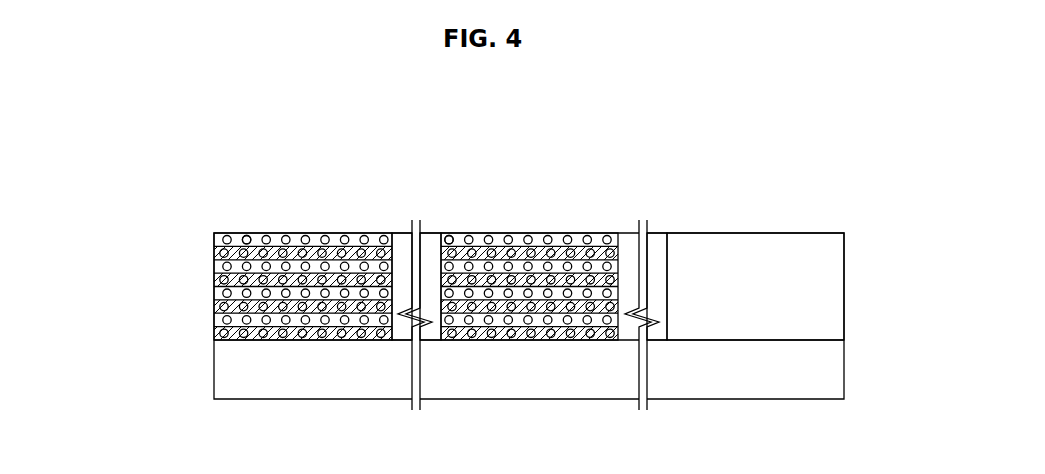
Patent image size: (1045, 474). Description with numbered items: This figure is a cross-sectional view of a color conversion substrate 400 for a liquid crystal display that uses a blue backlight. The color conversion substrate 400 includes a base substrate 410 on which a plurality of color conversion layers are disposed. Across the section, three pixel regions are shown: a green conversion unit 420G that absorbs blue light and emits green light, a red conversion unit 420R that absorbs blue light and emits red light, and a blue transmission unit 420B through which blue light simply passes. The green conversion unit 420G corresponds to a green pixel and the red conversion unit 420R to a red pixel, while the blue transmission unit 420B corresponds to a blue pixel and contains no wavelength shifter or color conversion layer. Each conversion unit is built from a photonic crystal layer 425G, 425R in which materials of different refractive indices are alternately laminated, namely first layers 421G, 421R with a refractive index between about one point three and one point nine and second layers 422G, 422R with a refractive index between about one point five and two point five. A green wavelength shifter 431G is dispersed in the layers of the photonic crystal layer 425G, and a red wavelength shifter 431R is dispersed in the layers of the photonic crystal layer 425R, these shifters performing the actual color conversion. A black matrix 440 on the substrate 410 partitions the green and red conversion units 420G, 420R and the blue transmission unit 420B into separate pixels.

The color conversion substrate 400 is at (158, 111).
The base substrate 410 is at (830, 371).
The green conversion unit 420G is at (291, 228).
The red conversion unit 420R is at (601, 224).
The blue transmission unit 420B is at (756, 228).
The first layer 421G is at (214, 253).
The second layer 422G is at (214, 240).
The first layer 421R is at (460, 315).
The second layer 422R is at (600, 327).
The photonic crystal layer 425G is at (110, 208).
The photonic crystal layer 425R is at (572, 170).
The green wavelength shifter 431G is at (247, 235).
The red wavelength shifter 431R is at (449, 235).
The black matrix 440 is at (403, 233).